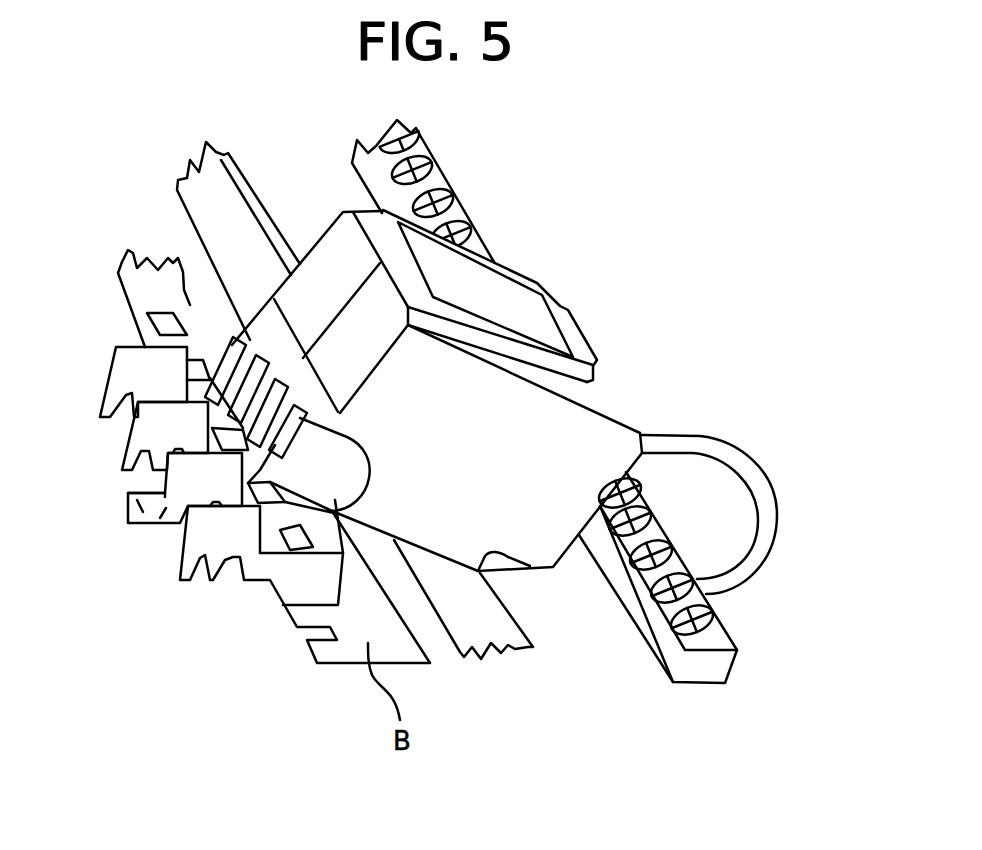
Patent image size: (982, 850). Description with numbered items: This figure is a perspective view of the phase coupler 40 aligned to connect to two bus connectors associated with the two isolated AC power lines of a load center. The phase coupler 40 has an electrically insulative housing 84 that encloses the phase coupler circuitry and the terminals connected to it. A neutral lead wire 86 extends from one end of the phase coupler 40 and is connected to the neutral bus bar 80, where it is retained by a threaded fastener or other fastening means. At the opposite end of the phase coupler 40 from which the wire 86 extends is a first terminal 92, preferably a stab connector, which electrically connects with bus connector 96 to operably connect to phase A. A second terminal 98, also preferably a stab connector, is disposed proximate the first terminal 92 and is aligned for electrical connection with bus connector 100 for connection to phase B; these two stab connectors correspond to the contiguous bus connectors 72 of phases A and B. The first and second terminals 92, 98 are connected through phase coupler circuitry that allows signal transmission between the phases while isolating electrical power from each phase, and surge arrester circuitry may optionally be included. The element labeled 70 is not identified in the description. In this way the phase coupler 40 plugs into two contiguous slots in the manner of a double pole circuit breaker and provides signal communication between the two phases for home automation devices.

The phase coupler 40 is at (530, 540).
The first conductive strip 70 is at (174, 259).
The bus connectors 72 is at (160, 512).
The neutral bus bar 80 is at (460, 215).
The housing 84 is at (610, 381).
The neutral lead wire 86 is at (760, 497).
The first terminal 92 is at (245, 386).
The bus connector 96 is at (143, 510).
The second terminal 98 is at (325, 425).
The bus connector 100 is at (189, 580).